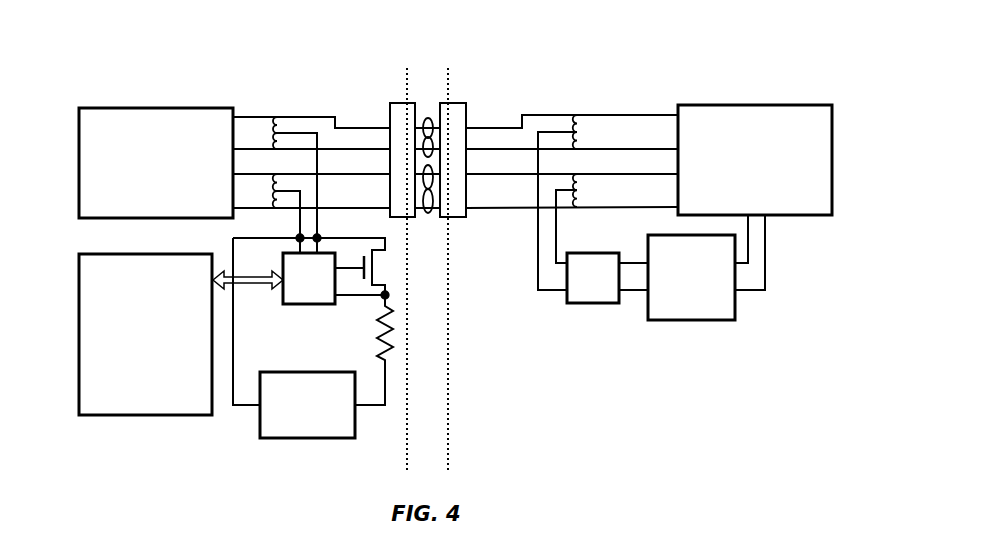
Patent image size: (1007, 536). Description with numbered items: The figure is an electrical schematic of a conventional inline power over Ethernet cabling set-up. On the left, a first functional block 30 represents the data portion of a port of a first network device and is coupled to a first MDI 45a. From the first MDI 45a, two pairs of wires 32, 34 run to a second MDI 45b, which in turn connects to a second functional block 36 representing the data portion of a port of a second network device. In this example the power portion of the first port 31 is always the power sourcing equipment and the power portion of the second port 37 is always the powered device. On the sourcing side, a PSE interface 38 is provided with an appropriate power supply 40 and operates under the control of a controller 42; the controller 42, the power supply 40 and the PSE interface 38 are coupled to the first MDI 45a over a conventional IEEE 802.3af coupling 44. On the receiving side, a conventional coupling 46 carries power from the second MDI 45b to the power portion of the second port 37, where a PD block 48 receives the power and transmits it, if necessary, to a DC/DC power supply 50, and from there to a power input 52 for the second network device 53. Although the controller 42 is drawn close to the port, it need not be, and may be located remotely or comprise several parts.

The first functional block 30 is at (79, 163).
The power portion of the first port 31 is at (256, 90).
The IEEE 802.3af coupling 44 is at (280, 102).
The first MDI 45a is at (400, 103).
The second MDI 45b is at (456, 103).
The pair of wires 32 is at (428, 118).
The pair of wires 34 is at (428, 215).
The power portion of the second port 37 is at (659, 76).
The center-tapped transformer (Device 2 side) 46 is at (584, 102).
The second network device 53 is at (832, 160).
The second functional block 36 is at (785, 174).
The power input 52 is at (777, 228).
The PD block 48 is at (590, 305).
The DC/DC power supply 50 is at (692, 322).
The controller 42 is at (79, 337).
The PSE interface 38 is at (306, 306).
The power supply 40 is at (297, 440).